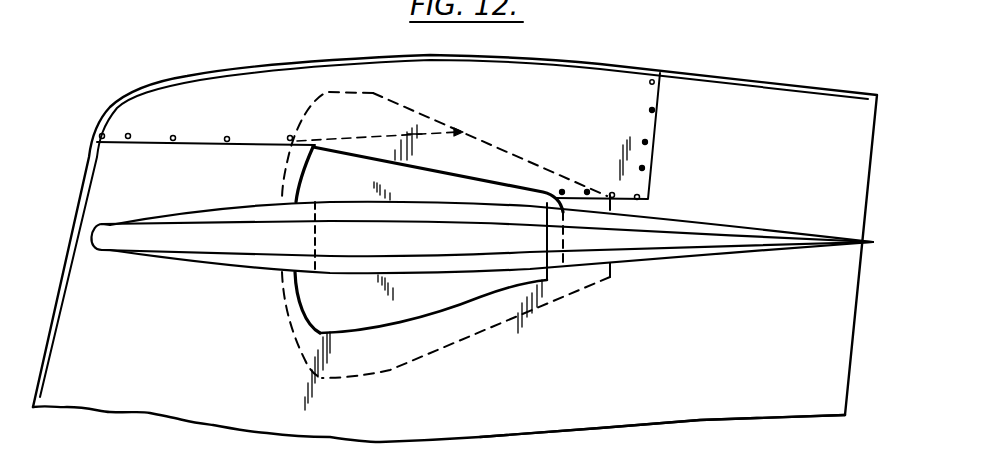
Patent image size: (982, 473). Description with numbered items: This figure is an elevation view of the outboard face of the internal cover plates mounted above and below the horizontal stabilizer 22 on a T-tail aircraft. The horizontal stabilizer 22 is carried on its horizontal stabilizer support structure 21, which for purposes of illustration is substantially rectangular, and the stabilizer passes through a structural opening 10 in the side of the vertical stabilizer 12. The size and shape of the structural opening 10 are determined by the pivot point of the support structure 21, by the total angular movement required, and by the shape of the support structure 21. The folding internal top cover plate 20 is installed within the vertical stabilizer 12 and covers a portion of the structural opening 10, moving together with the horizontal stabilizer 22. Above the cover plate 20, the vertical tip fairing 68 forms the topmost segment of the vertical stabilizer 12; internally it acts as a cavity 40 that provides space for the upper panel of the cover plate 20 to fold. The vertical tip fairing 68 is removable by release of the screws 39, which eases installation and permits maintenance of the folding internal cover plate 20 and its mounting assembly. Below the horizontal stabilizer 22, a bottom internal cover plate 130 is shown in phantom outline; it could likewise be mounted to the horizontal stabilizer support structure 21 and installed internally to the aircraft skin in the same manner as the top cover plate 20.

The vertical stabilizer 12 is at (223, 415).
The internal cavity 40 is at (662, 444).
The vertical tip fairing 68 is at (207, 83).
The screws 39 is at (173, 134).
The top cover plate 20 is at (440, 184).
The structural opening 10 is at (420, 312).
The bottom internal cover plate 130 is at (333, 302).
The horizontal stabilizer support structure 21 is at (487, 263).
The horizontal stabilizer 22 is at (203, 258).